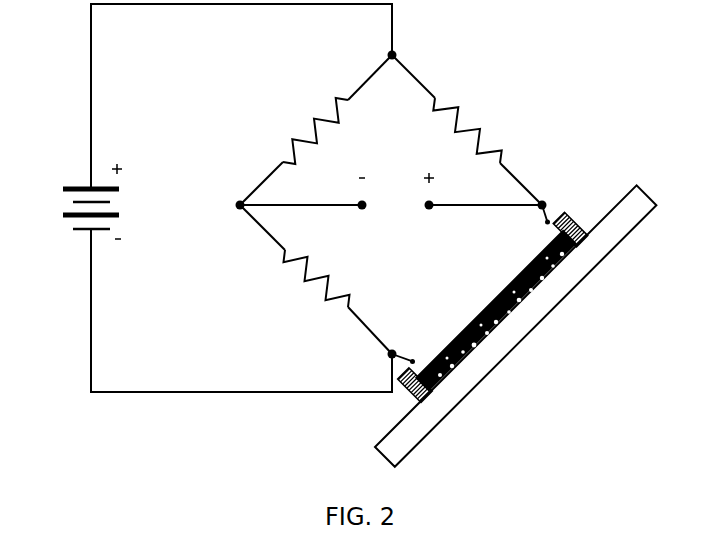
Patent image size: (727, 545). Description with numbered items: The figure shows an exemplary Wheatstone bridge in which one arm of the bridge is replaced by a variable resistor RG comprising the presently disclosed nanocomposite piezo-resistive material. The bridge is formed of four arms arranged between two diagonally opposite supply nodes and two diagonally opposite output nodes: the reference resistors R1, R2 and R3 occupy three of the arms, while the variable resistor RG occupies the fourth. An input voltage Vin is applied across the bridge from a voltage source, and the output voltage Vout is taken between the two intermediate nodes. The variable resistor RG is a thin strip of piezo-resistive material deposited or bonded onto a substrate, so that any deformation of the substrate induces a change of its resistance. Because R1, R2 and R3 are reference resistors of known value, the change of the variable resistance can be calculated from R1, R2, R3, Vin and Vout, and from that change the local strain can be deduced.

The input voltage Vin is at (108, 201).
The output voltage Vout is at (396, 195).
The reference resistor R1 is at (314, 130).
The reference resistor R2 is at (467, 129).
The reference resistor R3 is at (315, 279).
The variable resistor RG is at (515, 325).